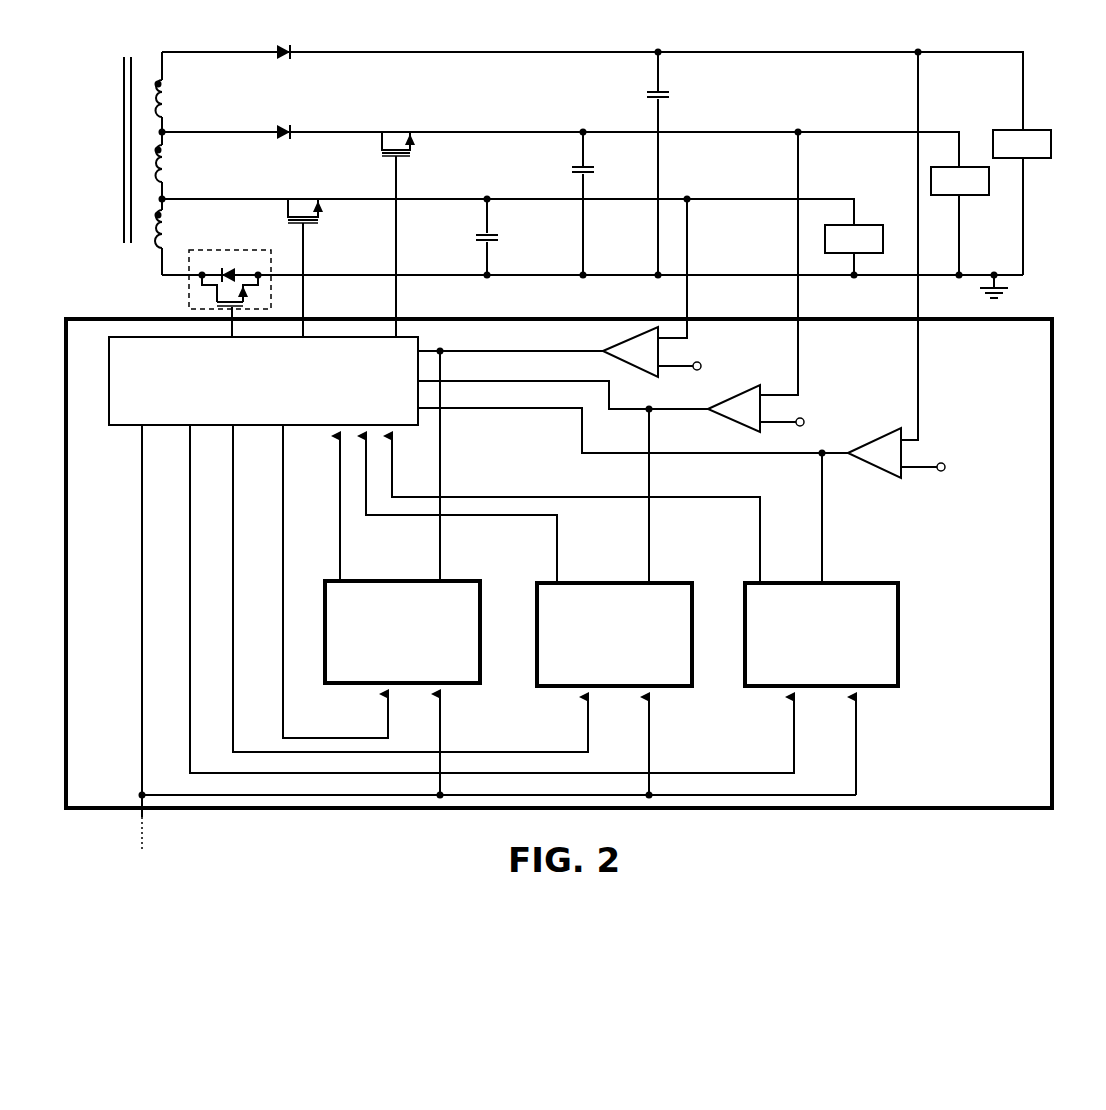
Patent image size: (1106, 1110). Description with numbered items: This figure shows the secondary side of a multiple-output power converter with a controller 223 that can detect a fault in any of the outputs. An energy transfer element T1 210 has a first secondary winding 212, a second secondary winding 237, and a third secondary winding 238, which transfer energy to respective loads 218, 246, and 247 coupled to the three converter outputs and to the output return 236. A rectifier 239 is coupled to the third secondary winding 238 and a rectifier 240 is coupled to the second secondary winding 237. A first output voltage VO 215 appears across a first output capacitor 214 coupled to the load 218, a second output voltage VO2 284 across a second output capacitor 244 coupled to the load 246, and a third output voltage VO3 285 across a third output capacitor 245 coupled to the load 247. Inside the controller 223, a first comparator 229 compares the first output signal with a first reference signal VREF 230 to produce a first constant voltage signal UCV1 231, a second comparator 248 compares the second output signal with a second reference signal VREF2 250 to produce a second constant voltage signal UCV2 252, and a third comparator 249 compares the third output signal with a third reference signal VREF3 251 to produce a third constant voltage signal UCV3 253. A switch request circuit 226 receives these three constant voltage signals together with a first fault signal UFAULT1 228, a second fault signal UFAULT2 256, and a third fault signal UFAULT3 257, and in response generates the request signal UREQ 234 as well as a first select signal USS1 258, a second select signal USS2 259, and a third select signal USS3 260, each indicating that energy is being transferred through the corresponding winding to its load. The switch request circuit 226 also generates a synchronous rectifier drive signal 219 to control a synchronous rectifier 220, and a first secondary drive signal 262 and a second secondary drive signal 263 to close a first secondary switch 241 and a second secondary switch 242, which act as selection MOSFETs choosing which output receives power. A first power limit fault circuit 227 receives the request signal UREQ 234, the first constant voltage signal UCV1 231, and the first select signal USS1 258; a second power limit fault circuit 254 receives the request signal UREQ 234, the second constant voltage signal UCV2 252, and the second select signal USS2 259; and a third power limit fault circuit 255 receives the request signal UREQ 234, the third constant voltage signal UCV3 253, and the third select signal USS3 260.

The energy transfer element T1 210 is at (114, 259).
The first secondary winding 212 is at (162, 233).
The second secondary winding 237 is at (165, 166).
The third secondary winding 238 is at (165, 101).
The rectifier 239 is at (282, 58).
The rectifier 240 is at (283, 126).
The first secondary switch 241 is at (304, 200).
The second secondary switch 242 is at (396, 130).
The synchronous rectifier 220 is at (257, 252).
The synchronous rectifier drive signal 219 is at (232, 318).
The first secondary drive signal 262 is at (305, 253).
The second secondary drive signal 263 is at (397, 193).
The first output capacitor 214 is at (473, 238).
The first output voltage VO 215 is at (518, 240).
The second output capacitor 244 is at (573, 168).
The second output voltage VO2 284 is at (615, 174).
The third output capacitor 245 is at (650, 93).
The third output voltage VO3 285 is at (699, 96).
The load 218 is at (872, 225).
The load 246 is at (976, 200).
The load 247 is at (1038, 125).
The output return 236 is at (1008, 290).
The controller 223 is at (900, 814).
The switch request circuit 226 is at (123, 432).
The first comparator 229 is at (650, 375).
The first reference signal VREF 230 is at (725, 357).
The first constant voltage signal UCV1 231 is at (530, 344).
The second comparator 248 is at (717, 425).
The second reference signal VREF2 250 is at (821, 418).
The second constant voltage signal UCV2 252 is at (530, 373).
The third comparator 249 is at (873, 472).
The third reference signal VREF3 251 is at (977, 460).
The third constant voltage signal UCV3 253 is at (530, 400).
The first power limit fault circuit 227 is at (454, 574).
The first fault signal UFAULT1 228 is at (398, 541).
The second power limit fault circuit 254 is at (536, 584).
The second fault signal UFAULT2 256 is at (614, 534).
The third power limit fault circuit 255 is at (882, 581).
The third fault signal UFAULT3 257 is at (728, 534).
The first select signal USS1 258 is at (318, 718).
The second select signal USS2 259 is at (516, 730).
The third select signal USS3 260 is at (732, 726).
The request signal UREQ 234 is at (206, 836).